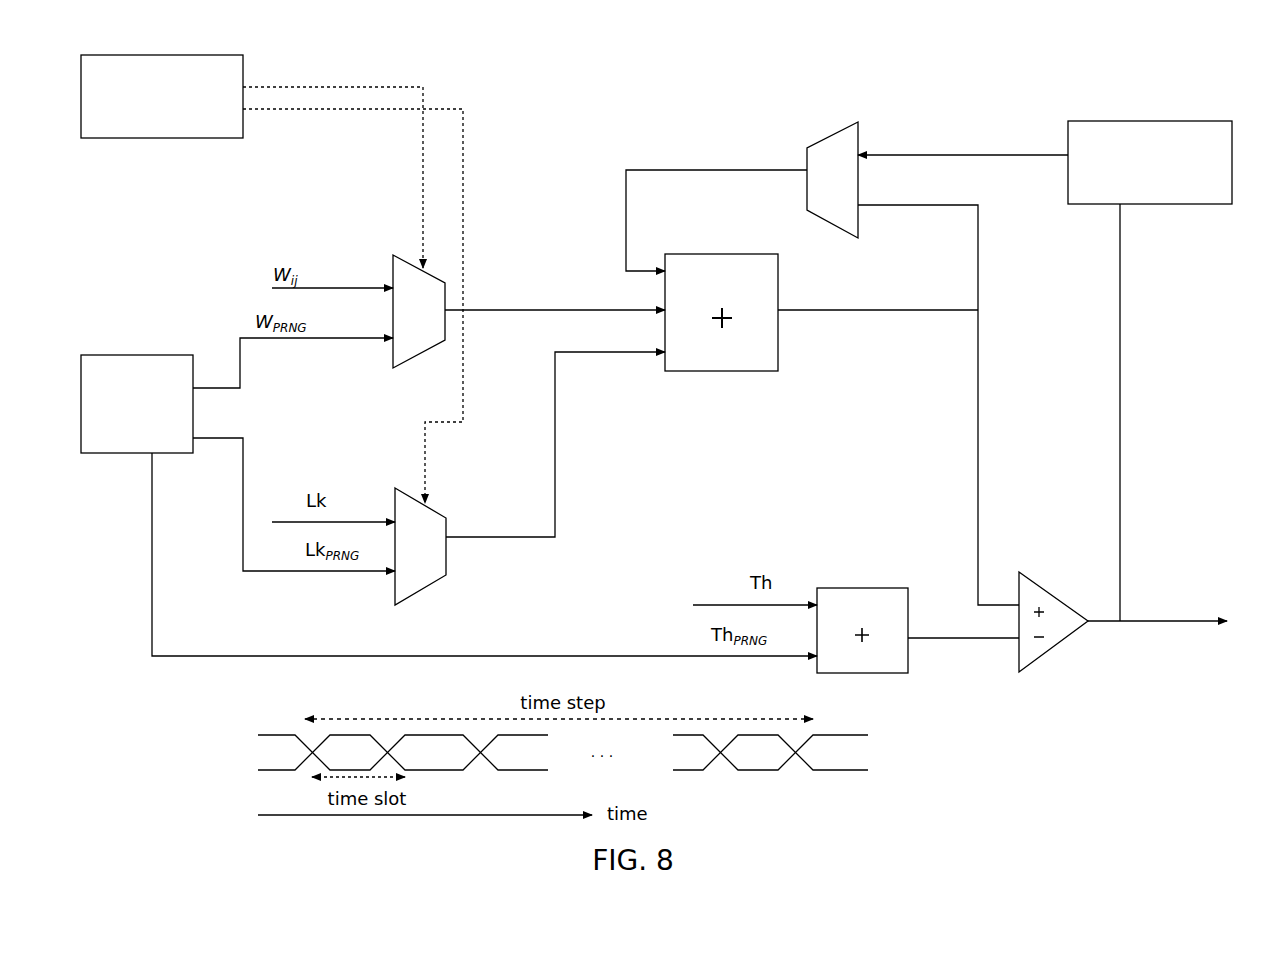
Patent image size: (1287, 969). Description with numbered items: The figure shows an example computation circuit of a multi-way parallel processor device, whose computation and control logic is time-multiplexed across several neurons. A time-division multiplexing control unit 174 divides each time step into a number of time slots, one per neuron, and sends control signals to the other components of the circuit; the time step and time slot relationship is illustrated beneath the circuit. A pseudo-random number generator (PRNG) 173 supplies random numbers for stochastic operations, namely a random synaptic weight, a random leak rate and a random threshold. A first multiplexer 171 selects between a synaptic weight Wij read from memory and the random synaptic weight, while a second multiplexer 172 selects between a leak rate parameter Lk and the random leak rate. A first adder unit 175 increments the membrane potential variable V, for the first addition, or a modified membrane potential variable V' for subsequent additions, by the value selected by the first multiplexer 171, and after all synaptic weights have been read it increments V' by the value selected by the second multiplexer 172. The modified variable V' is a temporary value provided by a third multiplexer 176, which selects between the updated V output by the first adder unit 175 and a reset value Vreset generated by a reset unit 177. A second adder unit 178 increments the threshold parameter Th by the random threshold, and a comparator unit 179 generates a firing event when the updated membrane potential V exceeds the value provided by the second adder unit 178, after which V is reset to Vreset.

The first multiplexer 171 is at (394, 267).
The second multiplexer 172 is at (448, 521).
The pseudo-random number generator (PRNG) 173 is at (132, 454).
The time-division multiplexing control unit 174 is at (193, 55).
The first adder unit 175 is at (732, 371).
The third multiplexer 176 is at (824, 131).
The reset unit 177 is at (1183, 205).
The second adder unit 178 is at (867, 588).
The comparator unit 179 is at (1047, 585).